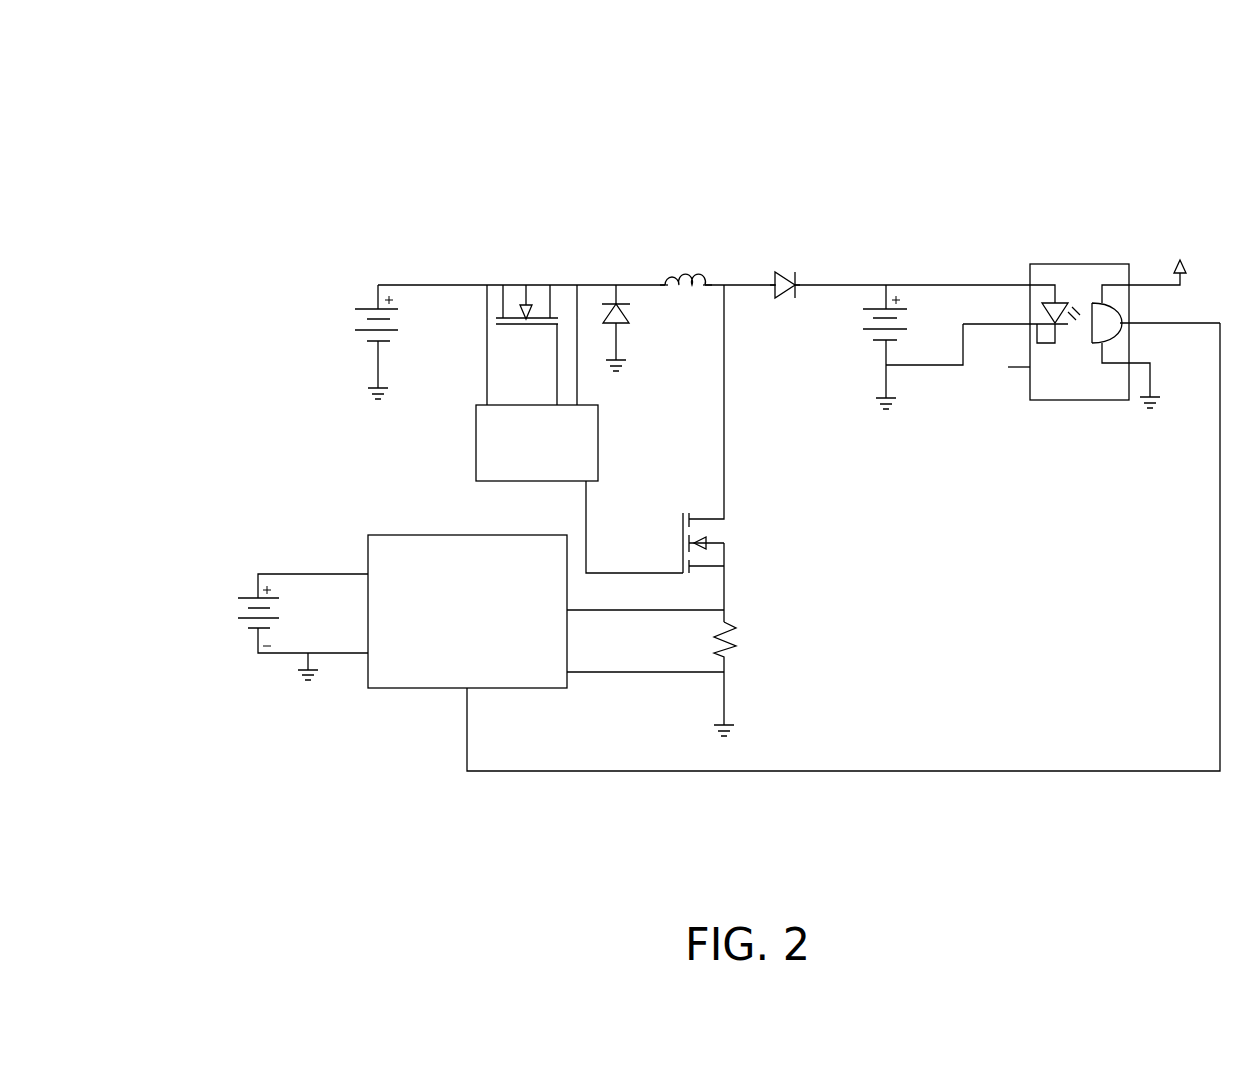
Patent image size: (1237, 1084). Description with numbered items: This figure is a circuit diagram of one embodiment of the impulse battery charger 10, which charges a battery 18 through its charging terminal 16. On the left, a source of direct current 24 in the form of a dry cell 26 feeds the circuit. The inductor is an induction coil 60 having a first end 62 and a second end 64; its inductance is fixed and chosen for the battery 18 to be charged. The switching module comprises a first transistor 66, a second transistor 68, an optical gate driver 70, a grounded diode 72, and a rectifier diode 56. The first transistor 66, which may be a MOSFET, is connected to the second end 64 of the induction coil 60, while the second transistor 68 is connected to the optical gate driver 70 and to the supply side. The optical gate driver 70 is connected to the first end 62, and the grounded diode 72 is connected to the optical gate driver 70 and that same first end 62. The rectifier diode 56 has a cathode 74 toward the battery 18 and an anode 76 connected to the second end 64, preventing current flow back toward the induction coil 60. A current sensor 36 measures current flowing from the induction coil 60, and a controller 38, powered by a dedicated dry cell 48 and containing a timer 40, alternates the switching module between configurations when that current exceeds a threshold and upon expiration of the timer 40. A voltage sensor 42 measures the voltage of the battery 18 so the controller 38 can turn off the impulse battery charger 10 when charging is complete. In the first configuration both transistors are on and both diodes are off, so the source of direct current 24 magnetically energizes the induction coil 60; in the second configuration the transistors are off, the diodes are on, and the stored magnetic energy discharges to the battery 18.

The impulse battery charger 10 is at (1034, 140).
The charging terminal 16 is at (886, 283).
The battery 18 is at (907, 309).
The source of direct current 24 is at (352, 329).
The dry cell 26 is at (368, 341).
The current sensor 36 is at (740, 642).
The controller 38 is at (368, 688).
The timer 40 is at (415, 688).
The voltage sensor 42 is at (1078, 264).
The dedicated dry cell 48 is at (238, 618).
The rectifier diode 56 is at (784, 275).
The induction coil 60 is at (687, 272).
The first end 62 is at (664, 283).
The second end 64 is at (718, 285).
The first transistor 66 is at (724, 532).
The second transistor 68 is at (516, 288).
The optical gate driver 70 is at (476, 432).
The grounded diode 72 is at (616, 303).
The cathode 74 is at (797, 284).
The anode 76 is at (777, 283).